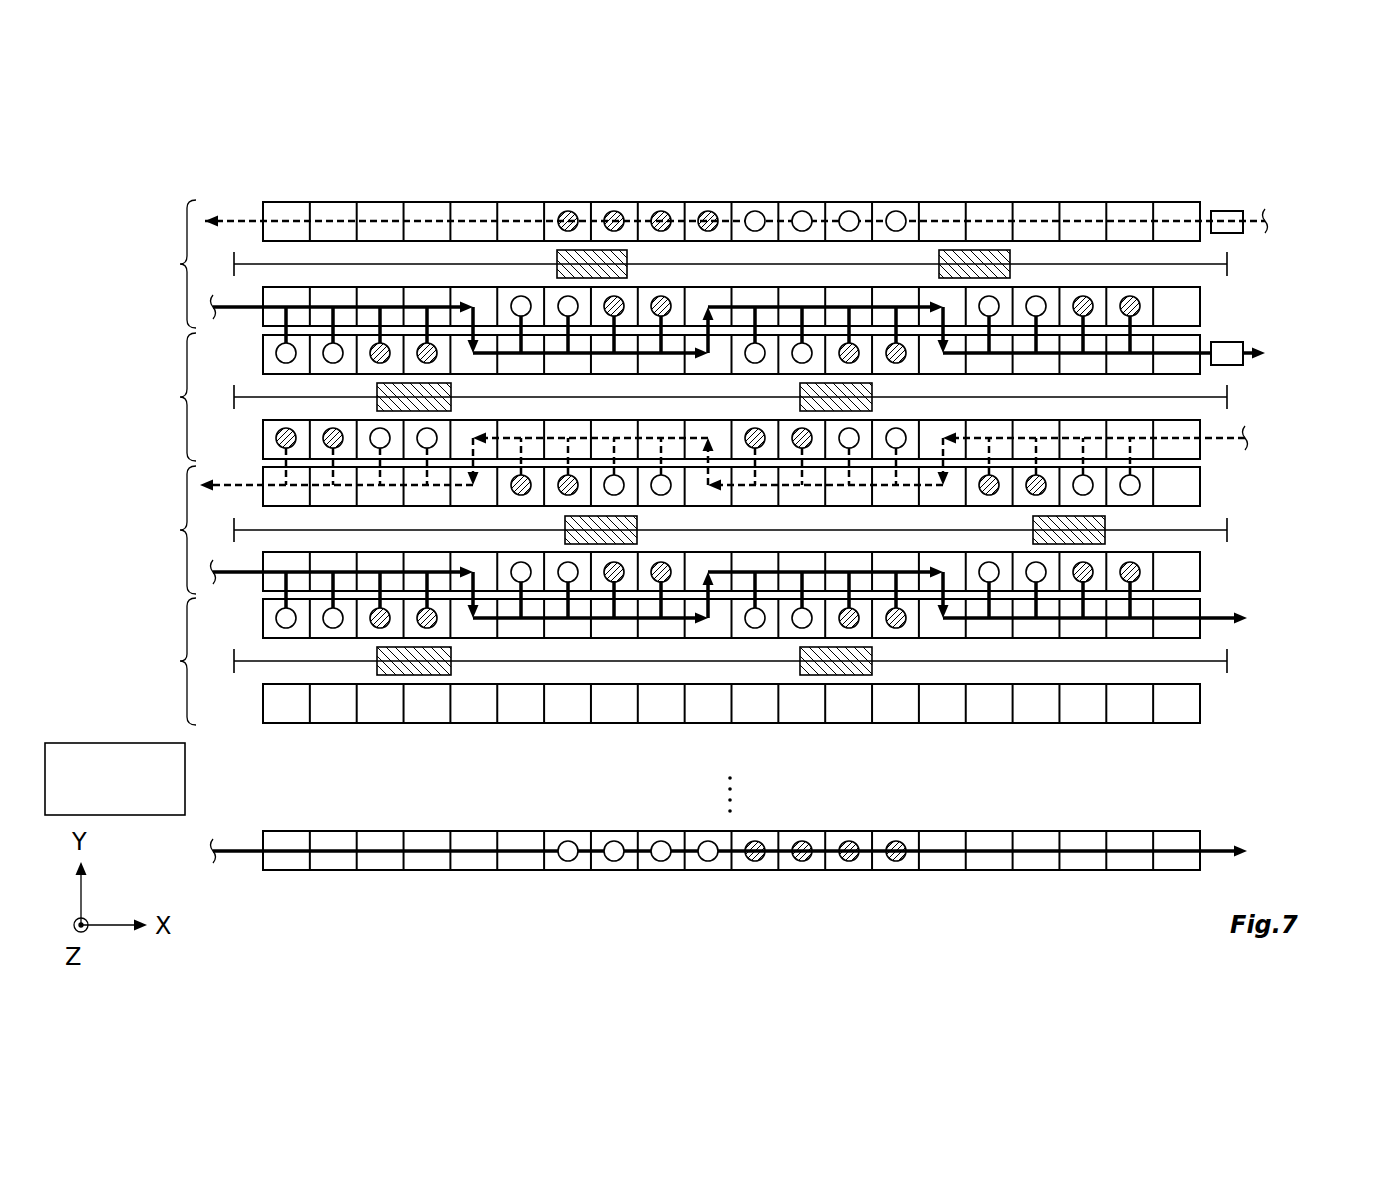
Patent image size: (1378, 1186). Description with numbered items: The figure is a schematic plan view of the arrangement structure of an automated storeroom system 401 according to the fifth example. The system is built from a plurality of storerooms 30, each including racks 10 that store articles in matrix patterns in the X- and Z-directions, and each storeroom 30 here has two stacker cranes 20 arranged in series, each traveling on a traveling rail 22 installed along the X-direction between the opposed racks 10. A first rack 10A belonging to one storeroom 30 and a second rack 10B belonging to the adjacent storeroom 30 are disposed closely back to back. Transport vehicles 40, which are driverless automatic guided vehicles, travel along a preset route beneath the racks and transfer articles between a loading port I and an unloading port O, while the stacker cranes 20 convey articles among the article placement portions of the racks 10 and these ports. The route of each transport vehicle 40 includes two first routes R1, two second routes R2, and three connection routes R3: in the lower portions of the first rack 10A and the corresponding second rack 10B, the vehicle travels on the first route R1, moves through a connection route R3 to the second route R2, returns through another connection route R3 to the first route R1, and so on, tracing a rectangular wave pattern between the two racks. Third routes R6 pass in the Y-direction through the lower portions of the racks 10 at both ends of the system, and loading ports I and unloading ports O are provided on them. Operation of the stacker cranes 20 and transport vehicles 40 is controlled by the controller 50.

The automated storeroom system 401 is at (153, 208).
The rack 10 is at (1190, 200).
The first rack 10A is at (1210, 296).
The second rack 10B is at (1210, 332).
The stacker crane 20 is at (574, 248).
The traveling rail 22 is at (1036, 278).
The storeroom 30 is at (686, 462).
The transport vehicle 40 is at (1230, 211).
The controller 50 is at (62, 743).
The first route R1 is at (322, 345).
The second route R2 is at (540, 343).
The connection route R3 is at (472, 345).
The third route R6 is at (1166, 215).
The loading port I is at (287, 340).
The unloading port O is at (382, 342).